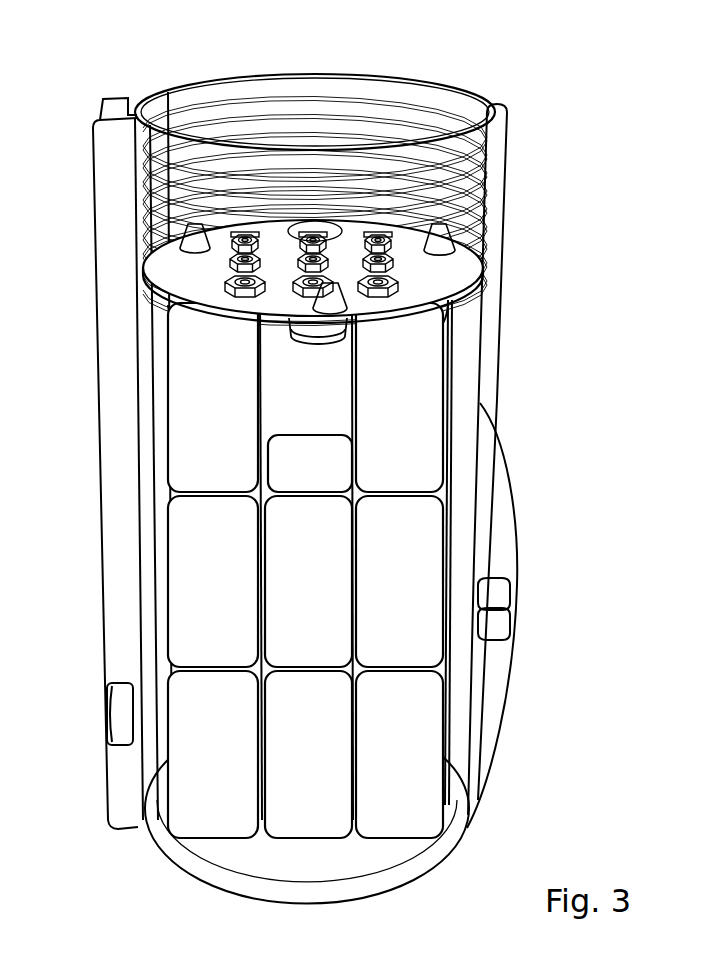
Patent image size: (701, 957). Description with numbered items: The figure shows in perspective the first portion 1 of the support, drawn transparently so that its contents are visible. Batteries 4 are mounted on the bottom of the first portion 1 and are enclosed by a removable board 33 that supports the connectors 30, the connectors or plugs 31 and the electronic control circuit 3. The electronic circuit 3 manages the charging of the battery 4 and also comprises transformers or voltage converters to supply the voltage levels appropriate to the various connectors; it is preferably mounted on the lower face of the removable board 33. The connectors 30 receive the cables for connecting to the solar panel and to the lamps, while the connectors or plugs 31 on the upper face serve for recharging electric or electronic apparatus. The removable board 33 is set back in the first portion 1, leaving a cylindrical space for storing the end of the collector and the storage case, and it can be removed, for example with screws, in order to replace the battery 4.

The first portion of the support 1 is at (125, 527).
The electronic control circuit 3 is at (318, 328).
The battery 4 is at (190, 632).
The connectors 30 is at (250, 238).
The connectors or plugs 31 is at (368, 222).
The removable board 33 is at (465, 268).